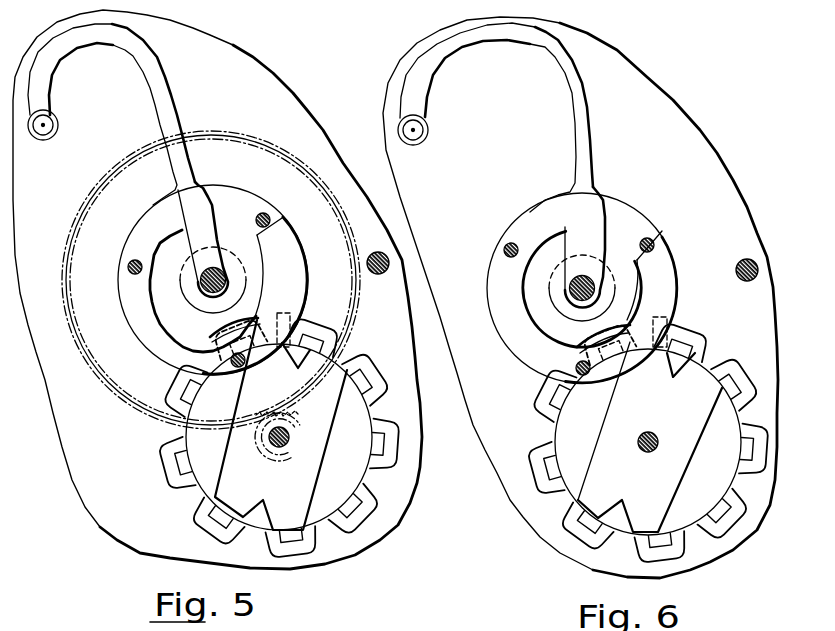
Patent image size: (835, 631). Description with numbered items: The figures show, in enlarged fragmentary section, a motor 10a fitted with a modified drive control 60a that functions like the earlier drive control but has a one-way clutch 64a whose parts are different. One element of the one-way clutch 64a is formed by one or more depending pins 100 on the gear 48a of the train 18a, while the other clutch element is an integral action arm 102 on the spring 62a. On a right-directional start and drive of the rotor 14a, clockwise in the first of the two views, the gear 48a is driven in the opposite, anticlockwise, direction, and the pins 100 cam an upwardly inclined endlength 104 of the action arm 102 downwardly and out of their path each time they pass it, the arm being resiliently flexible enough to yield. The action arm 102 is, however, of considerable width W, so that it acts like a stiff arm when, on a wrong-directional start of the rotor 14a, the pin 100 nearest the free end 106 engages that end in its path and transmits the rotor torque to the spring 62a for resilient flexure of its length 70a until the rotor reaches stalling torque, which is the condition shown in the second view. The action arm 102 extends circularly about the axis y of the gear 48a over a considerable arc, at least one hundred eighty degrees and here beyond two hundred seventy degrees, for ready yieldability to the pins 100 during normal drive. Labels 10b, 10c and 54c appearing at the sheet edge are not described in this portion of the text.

In FIG. 5, the motor 10a is at (281, 66).
In FIG. 6, the motor 10a is at (694, 89).
In FIG. 5, the length of the spring 70a is at (164, 85).
In FIG. 6, the length of the spring 70a is at (557, 58).
In FIG. 5, the spring 62a is at (199, 180).
In FIG. 6, the spring 62a is at (607, 190).
In FIG. 5, the one-way clutch 64a is at (106, 259).
In FIG. 6, the one-way clutch 64a is at (501, 223).
In FIG. 5, the action arm 102 is at (130, 305).
In FIG. 6, the action arm 102 is at (512, 331).
In FIG. 5, the drive control 60a is at (264, 287).
In FIG. 6, the drive control 60a is at (622, 284).
In FIG. 5, the upwardly inclined endlength 104 is at (285, 235).
In FIG. 6, the upwardly inclined endlength 104 is at (658, 262).
In FIG. 5, the free end of the arm 106 is at (255, 232).
In FIG. 6, the free end of the arm 106 is at (662, 238).
In FIG. 5, the axis y is at (215, 277).
In FIG. 6, the axis y is at (586, 286).
In FIG. 5, the pins 100 is at (263, 212).
In FIG. 6, the pins 100 is at (512, 243).
In FIG. 5, the width W is at (160, 329).
In FIG. 5, the gear 48a is at (125, 402).
In FIG. 5, the rotor 14a is at (298, 490).
In FIG. 6, the rotor 14a is at (660, 483).
In FIG. 5, the train 18a is at (251, 436).
In FIG. 5, the housing plate (other figure) 10b is at (373, 627).
In FIG. 6, the housing plate (other figure) 10c is at (523, 626).
In FIG. 6, the member (other figure) 54c is at (726, 623).